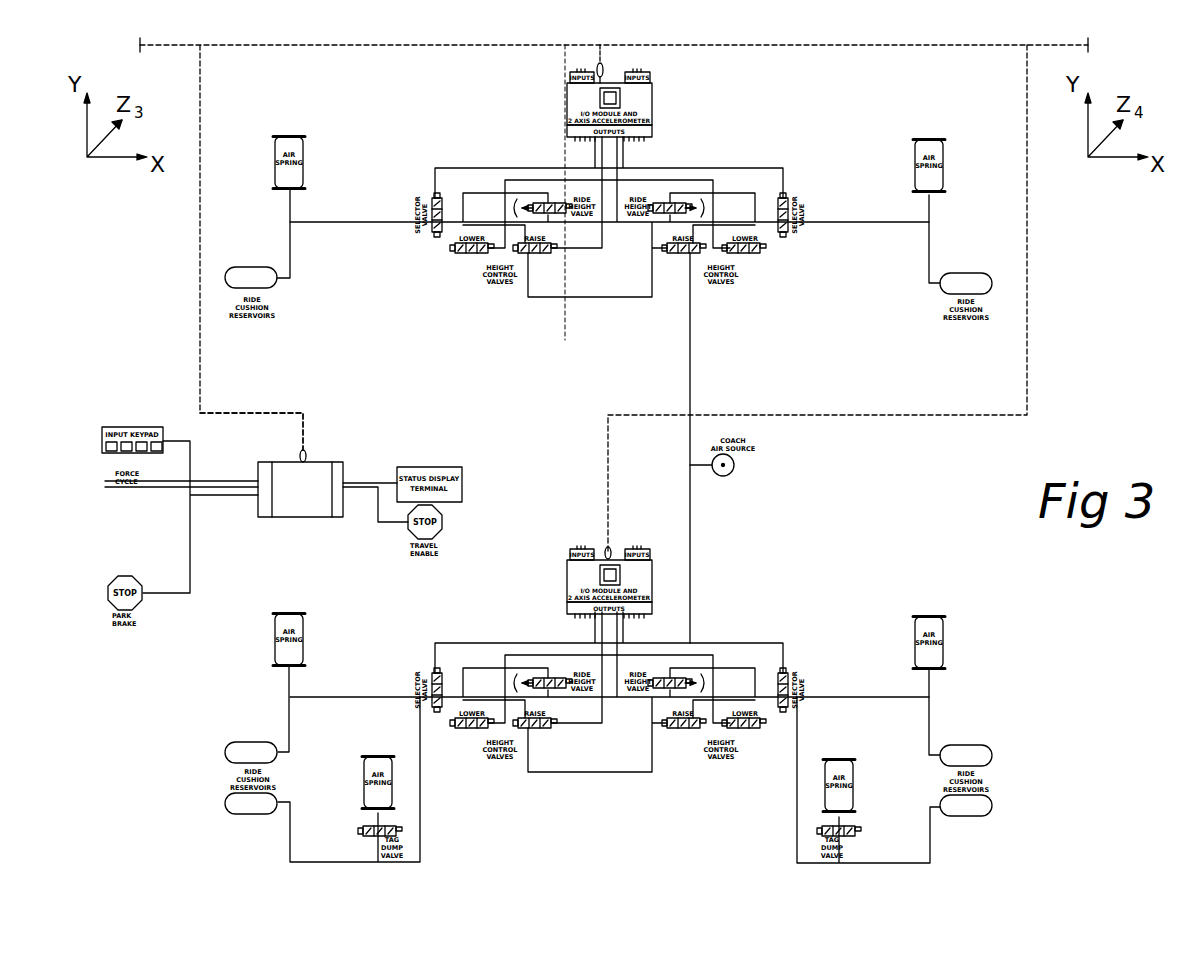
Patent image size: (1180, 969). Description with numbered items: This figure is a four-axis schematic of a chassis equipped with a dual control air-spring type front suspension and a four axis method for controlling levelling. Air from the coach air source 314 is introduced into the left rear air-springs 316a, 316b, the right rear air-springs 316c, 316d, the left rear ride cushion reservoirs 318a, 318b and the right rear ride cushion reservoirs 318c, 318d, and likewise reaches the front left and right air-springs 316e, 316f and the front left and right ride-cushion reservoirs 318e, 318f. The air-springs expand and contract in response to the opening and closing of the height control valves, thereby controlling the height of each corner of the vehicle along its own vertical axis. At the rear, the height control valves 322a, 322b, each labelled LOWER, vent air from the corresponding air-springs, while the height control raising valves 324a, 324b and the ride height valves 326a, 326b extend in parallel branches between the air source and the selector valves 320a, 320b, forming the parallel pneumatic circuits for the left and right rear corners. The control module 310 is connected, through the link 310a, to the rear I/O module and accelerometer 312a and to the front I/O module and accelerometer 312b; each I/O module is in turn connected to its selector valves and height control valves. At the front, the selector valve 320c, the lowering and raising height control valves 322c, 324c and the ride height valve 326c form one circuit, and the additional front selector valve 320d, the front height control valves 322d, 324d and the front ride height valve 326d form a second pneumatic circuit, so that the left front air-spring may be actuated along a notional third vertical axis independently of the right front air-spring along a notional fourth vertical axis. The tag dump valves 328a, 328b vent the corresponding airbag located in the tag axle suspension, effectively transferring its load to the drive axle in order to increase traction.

The control module 310 is at (320, 462).
The communication line 310a is at (305, 420).
The I/O module and X, Y axis accelerometers 312a is at (573, 578).
The front I/O module and accelerometer 312b is at (585, 104).
The coach air source 314 is at (732, 472).
The left rear air-spring 316a is at (322, 588).
The left rear air-spring 316b is at (380, 765).
The right rear air-spring 316c is at (932, 620).
The right rear air-spring 316d is at (839, 762).
The front left air-spring 316e is at (328, 107).
The front right air-spring 316f is at (958, 107).
The left rear ride cushion reservoir 318a is at (255, 750).
The left rear ride cushion reservoir 318b is at (258, 805).
The right rear ride cushion reservoir 318c is at (968, 755).
The right rear ride cushion reservoir 318d is at (978, 807).
The front left ride-cushion reservoir 318e is at (342, 338).
The front right ride-cushion reservoir 318f is at (950, 285).
The selector valve 320a is at (437, 672).
The selector valve 320b is at (783, 672).
The front selector valve 320c is at (784, 200).
The front selector valve 320d is at (448, 148).
The height control valve 322a is at (465, 730).
The height control valve 322b is at (752, 730).
The front height control valve 322c is at (788, 312).
The front height control valve 322d is at (465, 256).
The height control raising valve 324a is at (533, 730).
The height control raising valve 324b is at (680, 730).
The front height control valve 324c is at (682, 257).
The front height control valve 324d is at (532, 256).
The ride height valve 326a is at (552, 678).
The ride height valve 326b is at (660, 678).
The ride height valve 326c is at (660, 200).
The front ride height valve 326d is at (547, 200).
The tag dump valve 328a is at (395, 830).
The tag dump valve 328b is at (850, 830).